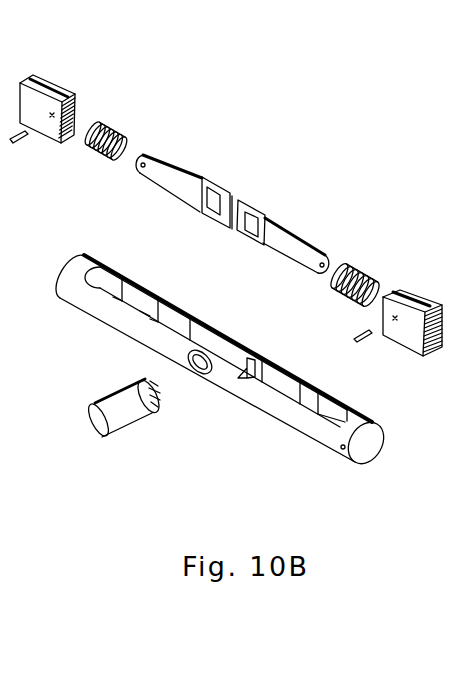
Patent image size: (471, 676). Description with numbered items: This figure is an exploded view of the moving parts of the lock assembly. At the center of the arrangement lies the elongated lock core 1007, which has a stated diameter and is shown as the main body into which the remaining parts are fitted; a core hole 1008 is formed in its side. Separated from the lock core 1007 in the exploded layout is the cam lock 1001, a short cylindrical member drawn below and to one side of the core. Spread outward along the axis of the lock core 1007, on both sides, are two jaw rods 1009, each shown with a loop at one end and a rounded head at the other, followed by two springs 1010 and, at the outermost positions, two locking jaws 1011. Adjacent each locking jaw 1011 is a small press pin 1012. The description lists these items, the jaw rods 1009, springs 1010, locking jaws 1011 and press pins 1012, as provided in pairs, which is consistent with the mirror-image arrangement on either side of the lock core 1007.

The cam lock 1001 is at (130, 415).
The lock core 1007 is at (105, 308).
The core hole 1008 is at (200, 373).
The jaw rods 1009 is at (180, 177).
The spring 1010 is at (118, 131).
The locking jaw 1011 is at (47, 83).
The press pin 1012 is at (26, 137).